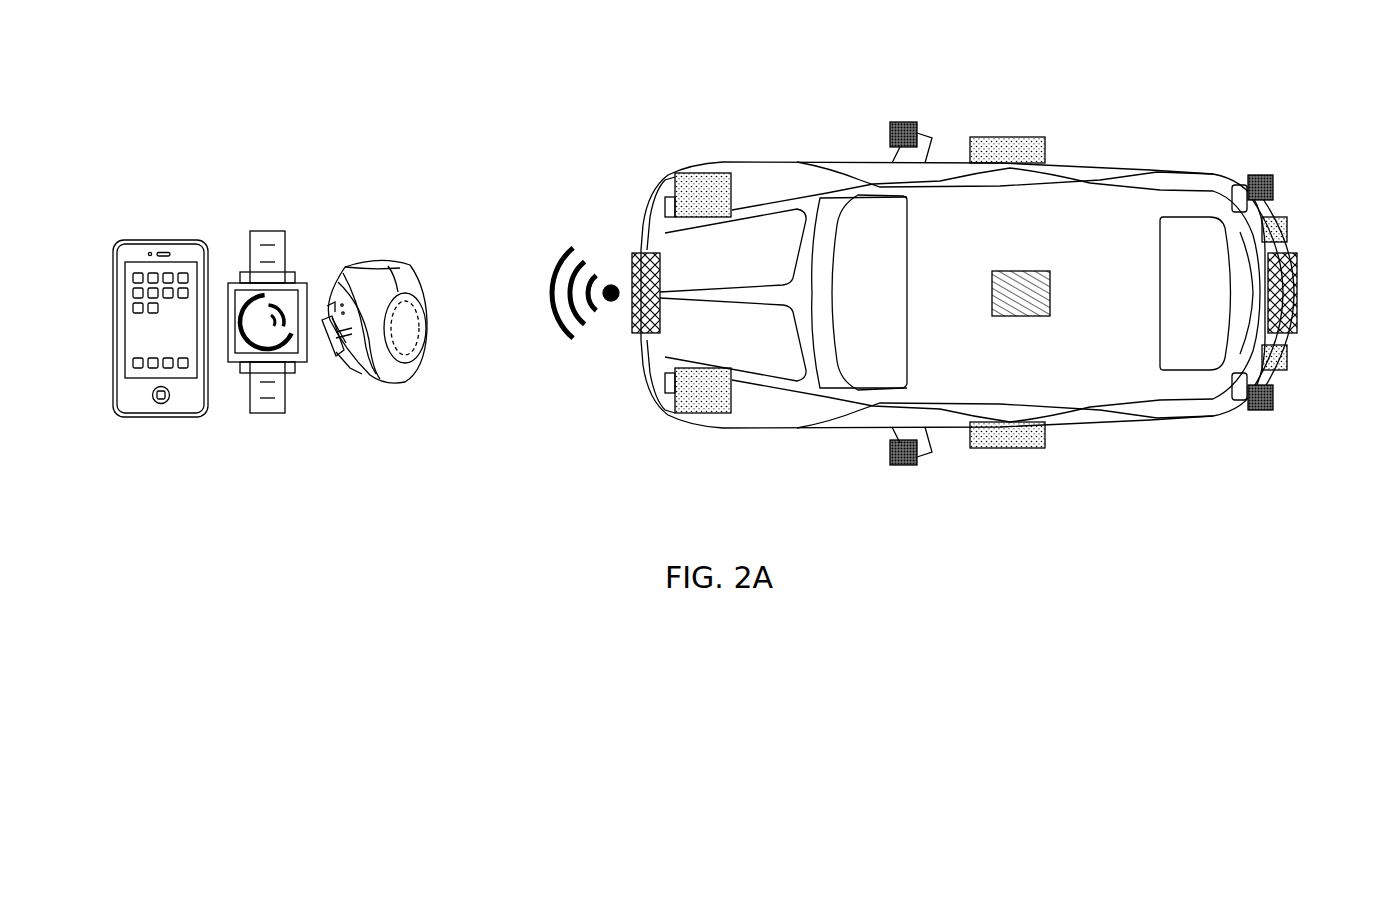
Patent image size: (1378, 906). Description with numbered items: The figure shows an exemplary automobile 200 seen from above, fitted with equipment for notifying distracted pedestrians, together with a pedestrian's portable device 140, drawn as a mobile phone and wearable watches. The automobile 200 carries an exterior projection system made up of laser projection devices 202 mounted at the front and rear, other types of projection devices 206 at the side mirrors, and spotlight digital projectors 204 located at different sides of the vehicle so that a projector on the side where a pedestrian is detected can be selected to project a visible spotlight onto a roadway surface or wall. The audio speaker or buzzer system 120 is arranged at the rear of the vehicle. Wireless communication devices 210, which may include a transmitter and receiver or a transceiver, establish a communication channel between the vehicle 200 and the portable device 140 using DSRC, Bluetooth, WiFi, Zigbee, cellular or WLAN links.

The portable device 140 is at (433, 220).
The automobile 200 is at (1193, 77).
The laser projection devices 202 is at (632, 327).
The spotlight digital projectors 204 is at (675, 173).
The projection devices 206 is at (900, 123).
The audio speaker or buzzer system 120 is at (1287, 358).
The wireless communication devices 210 is at (609, 273).